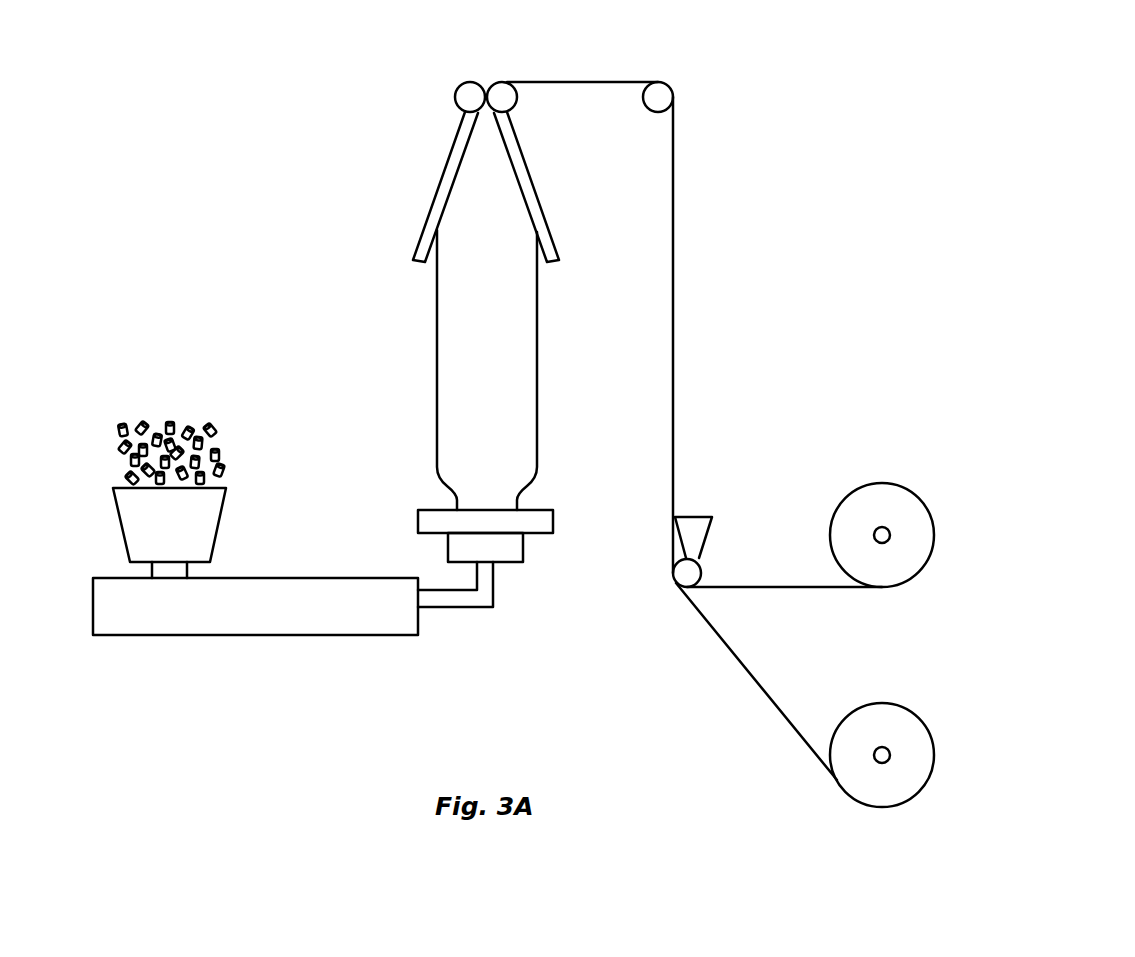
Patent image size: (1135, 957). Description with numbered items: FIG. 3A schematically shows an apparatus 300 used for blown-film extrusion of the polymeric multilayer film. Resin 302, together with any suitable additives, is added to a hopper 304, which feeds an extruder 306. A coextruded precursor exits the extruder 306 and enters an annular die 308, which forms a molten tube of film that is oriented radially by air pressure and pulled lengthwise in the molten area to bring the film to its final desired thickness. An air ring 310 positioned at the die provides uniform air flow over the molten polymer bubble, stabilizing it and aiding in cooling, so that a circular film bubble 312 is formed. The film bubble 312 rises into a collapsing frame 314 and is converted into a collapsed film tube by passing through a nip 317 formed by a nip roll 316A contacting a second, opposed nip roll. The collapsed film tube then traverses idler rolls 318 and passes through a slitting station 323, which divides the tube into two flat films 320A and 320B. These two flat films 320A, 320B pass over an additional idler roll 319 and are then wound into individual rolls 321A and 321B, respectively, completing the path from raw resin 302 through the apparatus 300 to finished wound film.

The apparatus 300 is at (210, 46).
The resin 302 is at (218, 432).
The hopper 304 is at (118, 523).
The extruder 306 is at (317, 615).
The annular die 308 is at (508, 557).
The air ring 310 is at (555, 522).
The film bubble 312 is at (517, 385).
The collapsing frame 314 is at (542, 203).
The nip roll 316A is at (465, 83).
The nip 317 is at (490, 76).
The idler rolls 318 is at (658, 98).
The idler roll 319 is at (703, 573).
The flat film 320A is at (773, 588).
The flat film 320B is at (758, 687).
The roll 321A is at (878, 483).
The roll 321B is at (878, 703).
The slitting station 323 is at (693, 520).